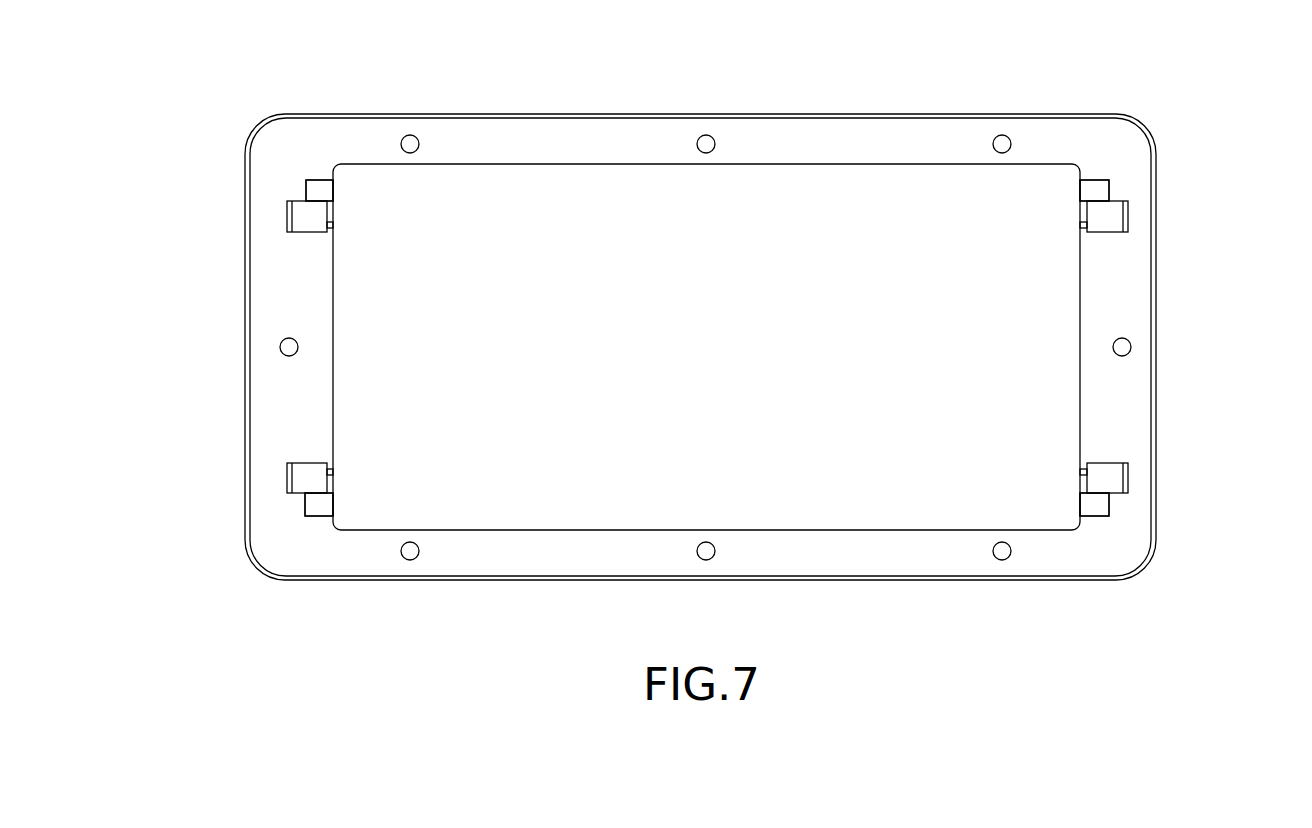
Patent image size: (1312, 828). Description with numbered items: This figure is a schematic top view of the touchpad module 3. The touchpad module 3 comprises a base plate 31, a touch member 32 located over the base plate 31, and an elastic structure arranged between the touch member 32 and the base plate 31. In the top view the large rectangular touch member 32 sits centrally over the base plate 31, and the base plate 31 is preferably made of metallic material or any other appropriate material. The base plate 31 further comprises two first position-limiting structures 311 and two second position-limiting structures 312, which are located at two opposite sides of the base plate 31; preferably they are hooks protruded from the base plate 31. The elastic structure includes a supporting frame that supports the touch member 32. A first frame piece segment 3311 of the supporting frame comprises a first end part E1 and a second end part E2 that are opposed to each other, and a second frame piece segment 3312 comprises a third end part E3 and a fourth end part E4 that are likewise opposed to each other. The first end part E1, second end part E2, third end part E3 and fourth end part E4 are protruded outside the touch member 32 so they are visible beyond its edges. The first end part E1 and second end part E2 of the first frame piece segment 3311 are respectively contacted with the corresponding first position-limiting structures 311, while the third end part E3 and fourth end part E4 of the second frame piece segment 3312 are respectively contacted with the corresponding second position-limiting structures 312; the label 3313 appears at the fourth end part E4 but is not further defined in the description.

The touchpad module 3 is at (1012, 64).
The base plate 31 is at (885, 560).
The touch member 32 is at (886, 178).
The first position-limiting structures 311 is at (301, 217).
The second position-limiting structures 312 is at (300, 474).
The first frame piece segment 3311 is at (317, 190).
The second frame piece segment 3312 is at (305, 505).
The third elastic member (E4) 3313 is at (1108, 505).
The first end part E1 is at (319, 190).
The second end part E2 is at (1094, 190).
The third end part E3 is at (319, 504).
The fourth end part E4 is at (1094, 504).